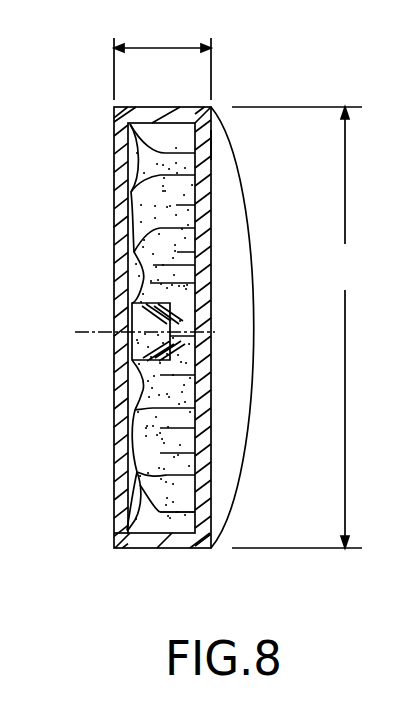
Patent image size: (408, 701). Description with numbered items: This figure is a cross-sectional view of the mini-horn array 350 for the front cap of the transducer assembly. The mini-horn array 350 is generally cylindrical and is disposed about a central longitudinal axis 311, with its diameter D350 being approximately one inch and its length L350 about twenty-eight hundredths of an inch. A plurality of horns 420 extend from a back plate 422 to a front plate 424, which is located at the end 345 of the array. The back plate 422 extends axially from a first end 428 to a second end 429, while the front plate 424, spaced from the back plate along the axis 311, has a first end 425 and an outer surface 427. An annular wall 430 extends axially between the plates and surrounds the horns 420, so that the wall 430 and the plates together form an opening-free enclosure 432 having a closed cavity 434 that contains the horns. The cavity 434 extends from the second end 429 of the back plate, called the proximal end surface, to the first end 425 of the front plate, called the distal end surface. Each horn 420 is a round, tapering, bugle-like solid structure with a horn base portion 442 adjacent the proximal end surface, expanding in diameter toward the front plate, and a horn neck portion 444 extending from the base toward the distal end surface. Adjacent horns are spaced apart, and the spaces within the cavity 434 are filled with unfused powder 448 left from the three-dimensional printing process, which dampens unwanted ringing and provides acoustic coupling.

The mini-horn array 350 is at (122, 123).
The end 345 is at (212, 106).
The annular wall 430 is at (153, 120).
The first end 428 is at (115, 151).
The second end 429 is at (121, 185).
The back plate 422 is at (126, 208).
The longitudinal axis 311 is at (82, 332).
The front plate 424 is at (220, 145).
The first end 425 is at (211, 183).
The horn 420 is at (178, 207).
The outer surface 427 is at (250, 250).
The unfused powder 448 is at (185, 302).
The horn base portion 442 is at (142, 482).
The horn neck portion 444 is at (185, 498).
The enclosure 432 is at (128, 537).
The cavity 434 is at (182, 523).
The length of array L350 is at (162, 67).
The diameter of mini-horn array D350 is at (303, 327).